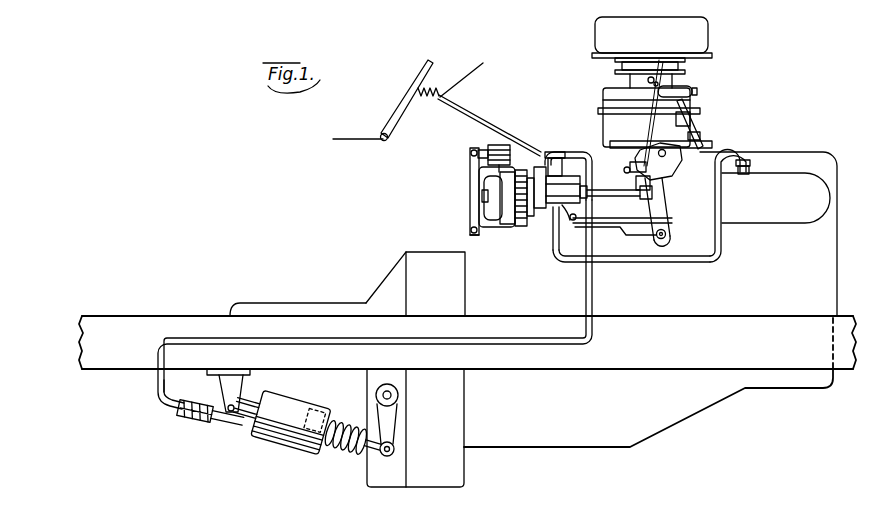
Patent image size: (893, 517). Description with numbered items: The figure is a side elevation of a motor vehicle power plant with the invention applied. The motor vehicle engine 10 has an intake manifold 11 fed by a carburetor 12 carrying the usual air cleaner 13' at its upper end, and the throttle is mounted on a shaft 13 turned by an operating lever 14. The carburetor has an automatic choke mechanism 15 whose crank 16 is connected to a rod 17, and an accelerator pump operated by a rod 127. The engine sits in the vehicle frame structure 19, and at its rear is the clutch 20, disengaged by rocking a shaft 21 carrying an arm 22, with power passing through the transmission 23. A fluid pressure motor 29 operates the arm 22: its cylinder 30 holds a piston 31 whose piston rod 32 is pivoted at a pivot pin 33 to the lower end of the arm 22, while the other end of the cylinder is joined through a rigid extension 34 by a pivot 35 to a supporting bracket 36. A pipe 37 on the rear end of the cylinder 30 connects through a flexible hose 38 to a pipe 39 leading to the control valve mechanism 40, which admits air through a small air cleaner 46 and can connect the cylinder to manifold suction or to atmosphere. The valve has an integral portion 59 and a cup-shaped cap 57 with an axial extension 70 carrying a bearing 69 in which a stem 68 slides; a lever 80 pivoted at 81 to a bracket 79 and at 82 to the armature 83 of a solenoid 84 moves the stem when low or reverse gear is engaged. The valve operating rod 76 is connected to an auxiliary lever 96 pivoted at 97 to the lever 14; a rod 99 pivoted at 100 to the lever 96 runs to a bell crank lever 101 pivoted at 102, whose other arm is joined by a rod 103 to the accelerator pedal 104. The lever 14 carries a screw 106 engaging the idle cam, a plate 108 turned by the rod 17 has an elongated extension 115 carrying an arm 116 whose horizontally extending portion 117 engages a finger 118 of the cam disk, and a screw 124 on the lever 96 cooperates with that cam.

The motor vehicle engine 10 is at (787, 150).
The intake manifold 11 is at (810, 212).
The carburetor 12 is at (603, 95).
The throttle shaft 13 is at (670, 170).
The air cleaner 13' is at (671, 45).
The operating lever 14 is at (722, 243).
The automatic choke mechanism 15 is at (652, 138).
The crank 16 is at (659, 60).
The rod 17 is at (690, 133).
The vehicle frame structure 19 is at (640, 337).
The clutch 20 is at (428, 253).
The shaft 21 is at (399, 395).
The arm 22 is at (401, 432).
The transmission 23 is at (298, 303).
The fluid pressure motor 29 is at (285, 450).
The cylinder 30 is at (295, 390).
The piston 31 is at (320, 406).
The piston rod 32 is at (360, 450).
The pivot pin 33 is at (390, 457).
The rigid extension 34 is at (250, 420).
The pivot 35 is at (228, 418).
The supporting bracket 36 is at (230, 395).
The pipe 37 is at (220, 422).
The flexible hose 38 is at (186, 416).
The pipe 39 is at (158, 392).
The control valve mechanism 40 is at (539, 212).
The air cleaner 46 is at (576, 162).
The cup-shaped cap 57 is at (472, 235).
The integral portion 59 is at (535, 158).
The stem 68 is at (484, 213).
The bearing 69 is at (489, 197).
The axial extension 70 is at (498, 183).
The valve operating rod 76 is at (613, 208).
The bracket 79 is at (492, 230).
The lever 80 is at (472, 172).
The pivot 81 is at (470, 230).
The pivot 82 is at (471, 152).
The armature 83 is at (486, 141).
The solenoid 84 is at (508, 147).
The auxiliary lever 96 is at (668, 214).
The pivot 97 is at (646, 256).
The rod 99 is at (640, 228).
The pivot 100 is at (670, 190).
The bell crank lever 101 is at (558, 262).
The pivot 102 is at (553, 150).
The rod 103 is at (497, 131).
The accelerator pedal 104 is at (428, 76).
The screw 106 is at (634, 167).
The plate 108 is at (648, 167).
The elongated extension 115 is at (688, 170).
The arm 116 is at (182, 448).
The horizontally extending portion 117 is at (697, 150).
The finger 118 is at (700, 142).
The screw 124 is at (624, 178).
The rod 127 is at (694, 112).